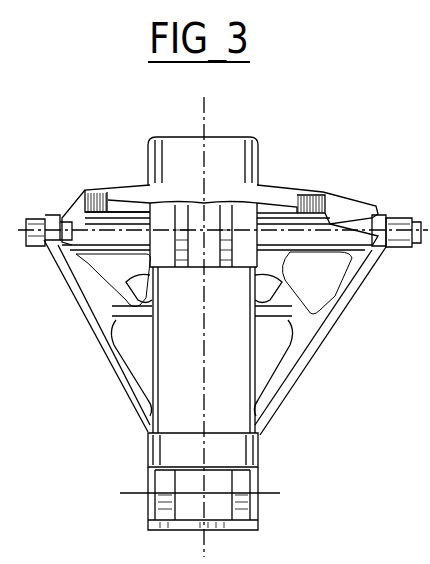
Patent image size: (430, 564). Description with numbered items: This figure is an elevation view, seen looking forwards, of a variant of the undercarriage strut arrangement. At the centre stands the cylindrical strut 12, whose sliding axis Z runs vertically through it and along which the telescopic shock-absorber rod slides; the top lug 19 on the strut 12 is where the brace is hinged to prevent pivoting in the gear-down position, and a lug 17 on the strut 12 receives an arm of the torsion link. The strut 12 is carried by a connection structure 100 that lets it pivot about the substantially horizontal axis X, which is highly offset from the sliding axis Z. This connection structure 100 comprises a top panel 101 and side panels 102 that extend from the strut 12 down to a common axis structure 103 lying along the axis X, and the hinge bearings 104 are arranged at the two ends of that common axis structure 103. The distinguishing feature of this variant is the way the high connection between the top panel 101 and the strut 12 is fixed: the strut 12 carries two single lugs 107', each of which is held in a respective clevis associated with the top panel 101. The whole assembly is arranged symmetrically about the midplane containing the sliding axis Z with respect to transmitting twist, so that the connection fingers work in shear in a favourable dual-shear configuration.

The cylindrical strut 12 is at (246, 366).
The lug 17 is at (247, 480).
The top lug 19 is at (226, 272).
The connection structure 100 is at (113, 349).
The top panel 101 is at (345, 207).
The side panel 102 is at (312, 297).
The common axis structure 103 is at (328, 237).
The hinge bearing 104 is at (37, 248).
The single lug 107' is at (202, 181).
The pivot axis X is at (425, 227).
The sliding axis Z is at (207, 119).